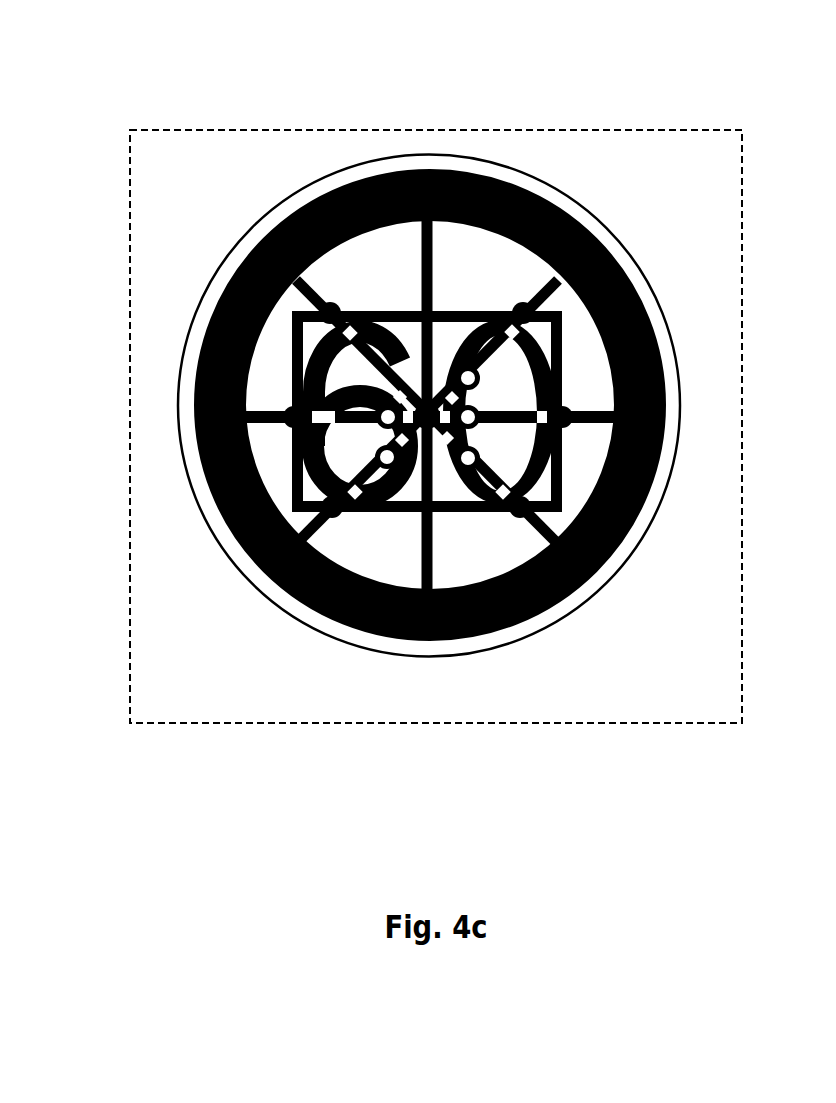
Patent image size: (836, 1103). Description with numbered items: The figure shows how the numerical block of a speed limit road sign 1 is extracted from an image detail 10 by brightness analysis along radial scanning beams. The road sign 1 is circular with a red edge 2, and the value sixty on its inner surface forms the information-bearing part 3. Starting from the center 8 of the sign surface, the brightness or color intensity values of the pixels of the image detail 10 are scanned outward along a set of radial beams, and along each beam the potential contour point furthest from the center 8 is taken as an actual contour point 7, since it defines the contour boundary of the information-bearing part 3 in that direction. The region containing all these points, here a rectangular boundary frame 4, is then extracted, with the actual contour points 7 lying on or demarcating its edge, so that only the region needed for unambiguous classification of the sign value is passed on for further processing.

The road sign 1 is at (262, 215).
The red edge 2 is at (220, 515).
The information-bearing part 3 is at (413, 487).
The boundary frame 4 is at (292, 452).
The actual contour points 7 is at (515, 305).
The center 8 is at (432, 428).
The image detail 10 is at (172, 723).